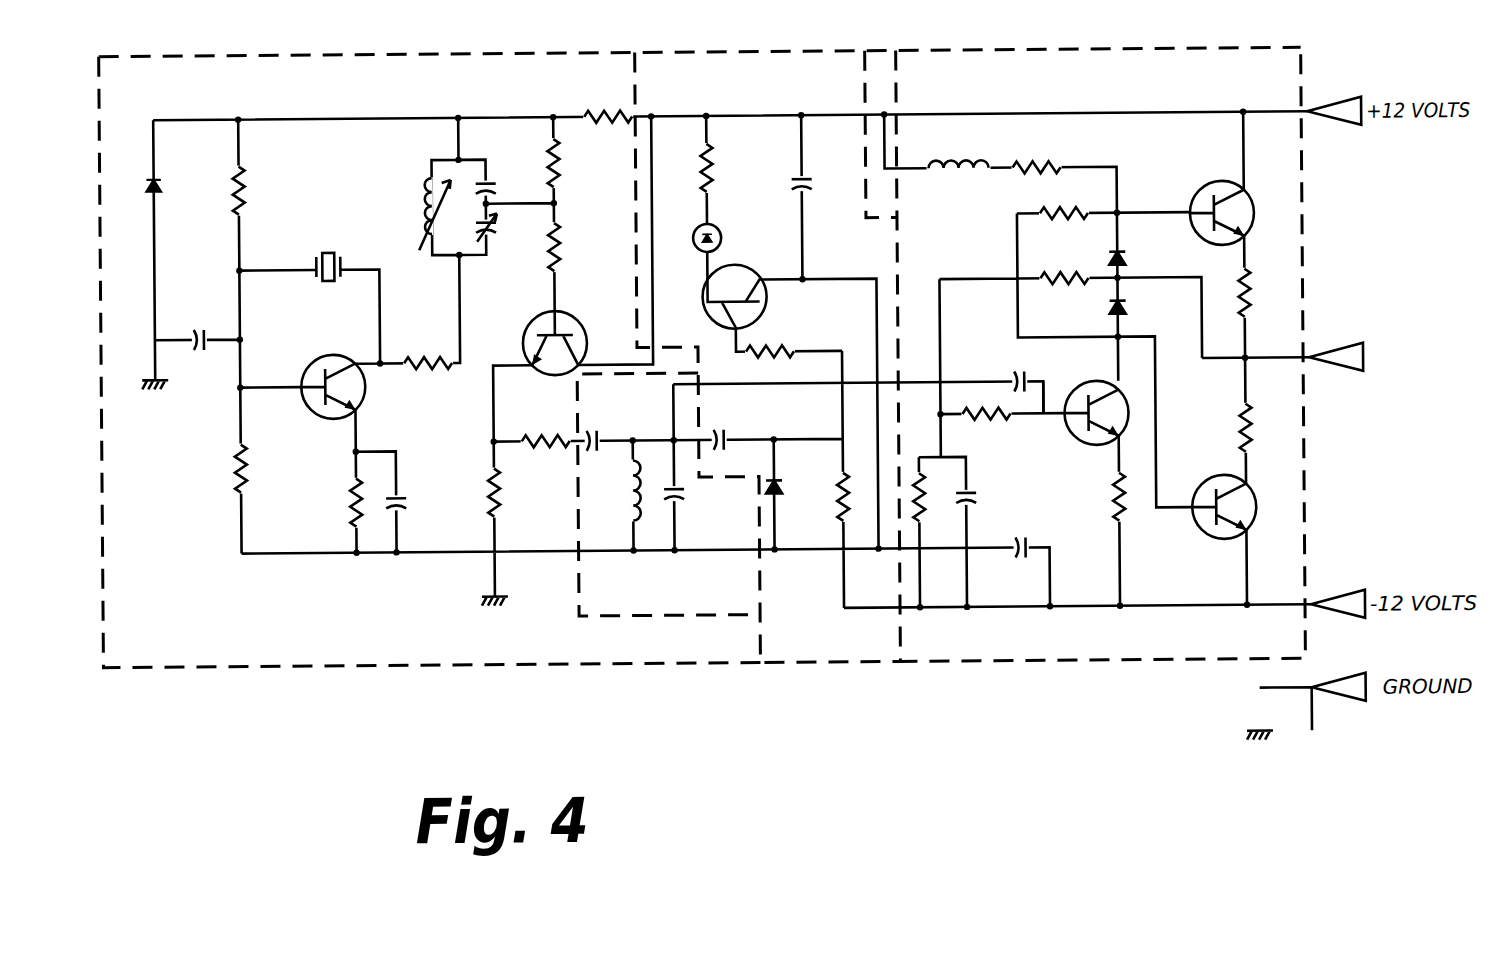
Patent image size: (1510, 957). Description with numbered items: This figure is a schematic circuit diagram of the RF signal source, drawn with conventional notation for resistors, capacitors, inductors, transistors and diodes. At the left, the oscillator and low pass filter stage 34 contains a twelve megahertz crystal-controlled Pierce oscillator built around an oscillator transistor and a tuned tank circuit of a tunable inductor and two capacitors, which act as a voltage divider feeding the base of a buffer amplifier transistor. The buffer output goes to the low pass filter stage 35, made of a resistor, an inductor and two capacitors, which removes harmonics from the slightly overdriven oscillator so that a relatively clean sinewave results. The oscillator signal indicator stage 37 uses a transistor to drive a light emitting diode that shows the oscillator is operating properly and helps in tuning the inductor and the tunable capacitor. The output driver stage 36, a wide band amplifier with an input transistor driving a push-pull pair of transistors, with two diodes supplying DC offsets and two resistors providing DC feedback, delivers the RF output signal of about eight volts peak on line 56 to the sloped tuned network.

The oscillator and low pass filter stage 34 is at (289, 54).
The low pass filter stage 35 is at (680, 617).
The output driver stage 36 is at (1046, 51).
The oscillator signal indicator stage 37 is at (744, 50).
The RF output line 56 is at (1339, 351).